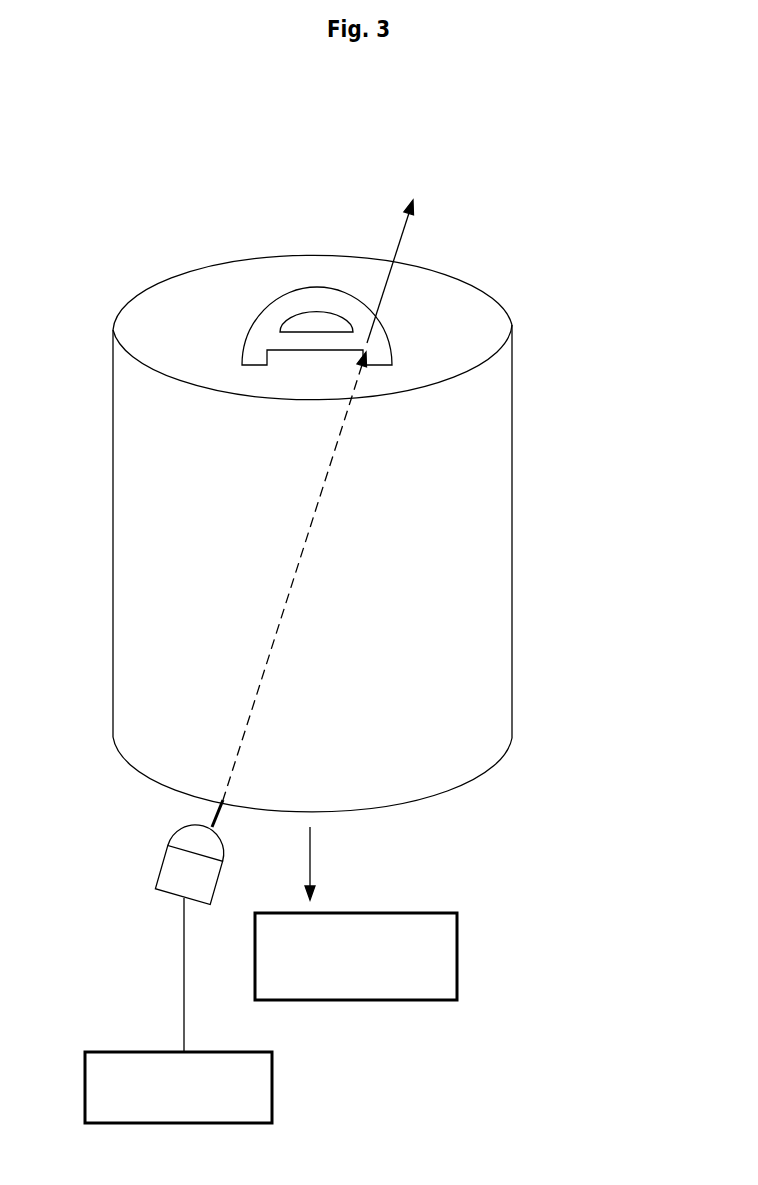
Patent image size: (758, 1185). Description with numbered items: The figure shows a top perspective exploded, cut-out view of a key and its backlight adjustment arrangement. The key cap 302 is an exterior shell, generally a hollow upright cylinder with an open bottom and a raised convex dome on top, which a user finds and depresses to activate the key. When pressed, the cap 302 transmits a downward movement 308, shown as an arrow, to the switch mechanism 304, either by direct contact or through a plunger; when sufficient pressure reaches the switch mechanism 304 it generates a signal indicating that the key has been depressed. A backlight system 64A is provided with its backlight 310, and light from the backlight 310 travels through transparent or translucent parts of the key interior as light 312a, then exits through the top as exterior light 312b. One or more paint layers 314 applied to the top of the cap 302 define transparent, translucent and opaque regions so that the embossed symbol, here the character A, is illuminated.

The key cap 302 is at (500, 543).
The paint layer 314 is at (478, 323).
The exterior light 312b is at (426, 255).
The light transmitted through the interior of the key 312a is at (267, 589).
The backlight 310 is at (133, 861).
The downward movement 308 is at (441, 863).
The switch mechanism 304 is at (356, 956).
The backlight system 64A is at (178, 1010).